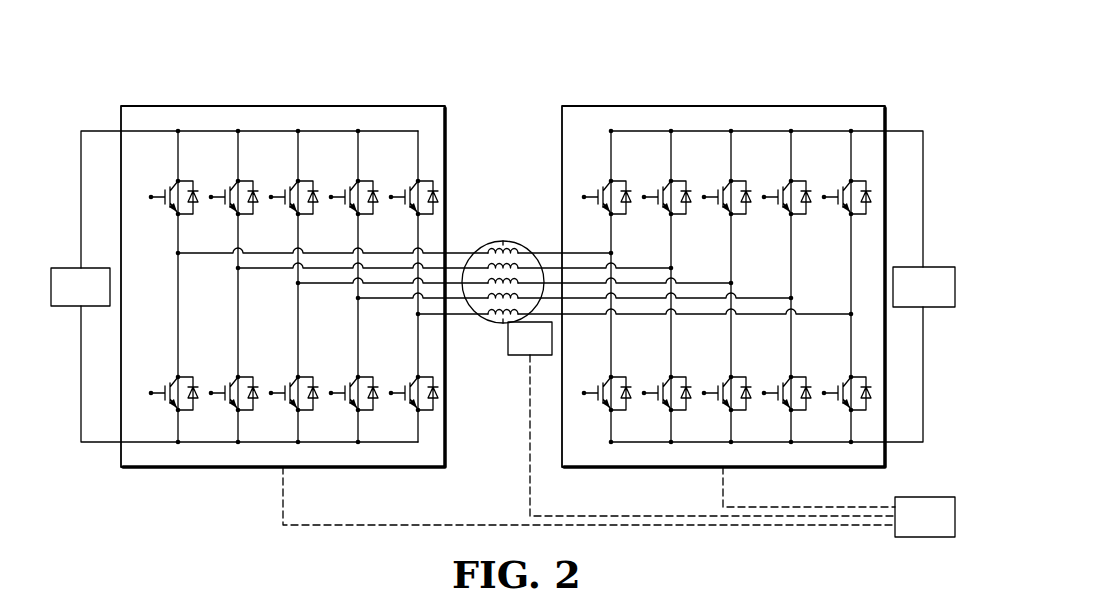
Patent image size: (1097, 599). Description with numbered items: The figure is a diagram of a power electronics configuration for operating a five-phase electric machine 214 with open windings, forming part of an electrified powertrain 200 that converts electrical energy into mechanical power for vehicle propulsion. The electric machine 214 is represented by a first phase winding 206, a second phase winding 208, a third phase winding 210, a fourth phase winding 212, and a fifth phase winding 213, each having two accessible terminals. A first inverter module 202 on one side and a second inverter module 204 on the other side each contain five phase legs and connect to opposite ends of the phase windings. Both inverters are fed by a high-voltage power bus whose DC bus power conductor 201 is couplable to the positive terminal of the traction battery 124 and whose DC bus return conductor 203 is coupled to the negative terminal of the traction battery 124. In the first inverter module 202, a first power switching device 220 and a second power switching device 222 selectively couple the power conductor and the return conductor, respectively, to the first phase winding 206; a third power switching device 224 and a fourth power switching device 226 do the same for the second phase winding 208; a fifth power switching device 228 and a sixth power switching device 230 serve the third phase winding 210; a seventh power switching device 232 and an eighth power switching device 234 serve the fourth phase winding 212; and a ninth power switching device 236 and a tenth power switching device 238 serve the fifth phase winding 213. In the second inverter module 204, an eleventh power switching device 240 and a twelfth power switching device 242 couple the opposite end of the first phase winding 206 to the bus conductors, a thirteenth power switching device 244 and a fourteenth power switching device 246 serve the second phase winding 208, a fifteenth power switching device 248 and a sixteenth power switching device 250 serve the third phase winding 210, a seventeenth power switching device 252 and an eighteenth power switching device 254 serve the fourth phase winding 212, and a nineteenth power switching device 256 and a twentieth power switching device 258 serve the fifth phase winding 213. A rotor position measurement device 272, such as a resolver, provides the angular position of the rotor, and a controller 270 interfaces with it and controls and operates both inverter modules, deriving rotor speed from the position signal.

The electrified powertrain 200 is at (735, 42).
The DC bus power conductor 201 is at (81, 201).
The first inverter module 202 is at (283, 106).
The DC bus return conductor 203 is at (81, 378).
The second inverter module 204 is at (722, 106).
The traction battery 124 is at (503, 287).
The first phase winding 206 is at (533, 258).
The second phase winding 208 is at (483, 256).
The third phase winding 210 is at (468, 256).
The fourth phase winding 212 is at (470, 314).
The fifth phase winding 213 is at (483, 316).
The electric machine 214 is at (500, 320).
The first power switching device 220 is at (177, 181).
The second power switching device 222 is at (177, 377).
The third power switching device 224 is at (237, 181).
The fourth power switching device 226 is at (237, 377).
The fifth power switching device 228 is at (297, 181).
The sixth power switching device 230 is at (297, 377).
The seventh power switching device 232 is at (357, 181).
The eighth power switching device 234 is at (357, 377).
The ninth power switching device 236 is at (417, 181).
The tenth power switching device 238 is at (417, 377).
The eleventh power switching device 240 is at (610, 181).
The twelfth power switching device 242 is at (610, 377).
The thirteenth power switching device 244 is at (670, 181).
The fourteenth power switching device 246 is at (670, 377).
The fifteenth power switching device 248 is at (730, 181).
The sixteenth power switching device 250 is at (730, 377).
The seventeenth power switching device 252 is at (790, 181).
The eighteenth power switching device 254 is at (790, 377).
The nineteenth power switching device 256 is at (850, 181).
The twentieth power switching device 258 is at (850, 377).
The controller 270 is at (619, 502).
The rotor position measurement device 272 is at (701, 419).